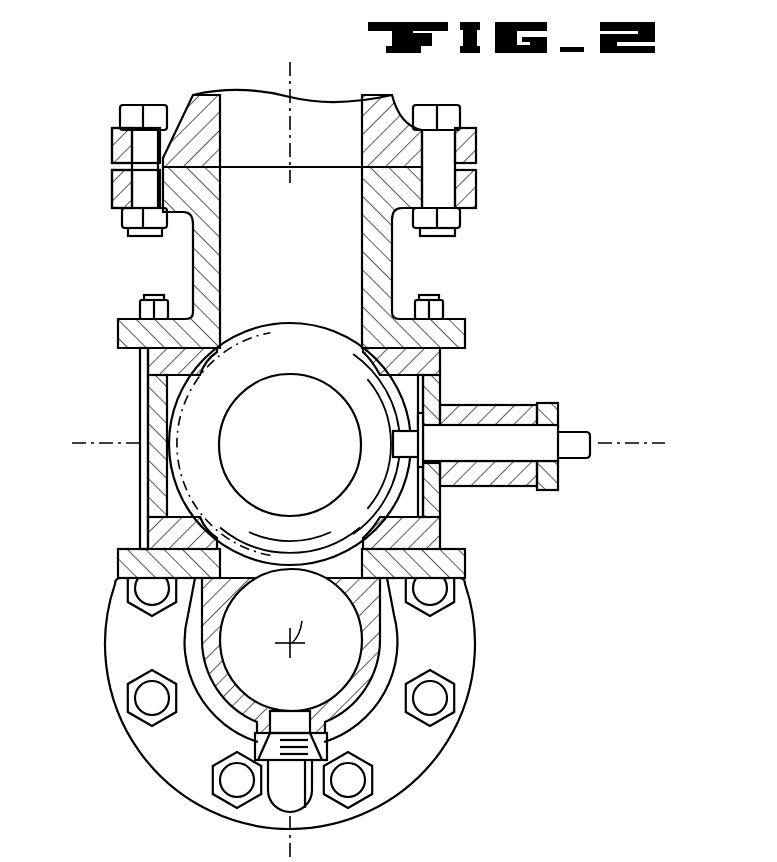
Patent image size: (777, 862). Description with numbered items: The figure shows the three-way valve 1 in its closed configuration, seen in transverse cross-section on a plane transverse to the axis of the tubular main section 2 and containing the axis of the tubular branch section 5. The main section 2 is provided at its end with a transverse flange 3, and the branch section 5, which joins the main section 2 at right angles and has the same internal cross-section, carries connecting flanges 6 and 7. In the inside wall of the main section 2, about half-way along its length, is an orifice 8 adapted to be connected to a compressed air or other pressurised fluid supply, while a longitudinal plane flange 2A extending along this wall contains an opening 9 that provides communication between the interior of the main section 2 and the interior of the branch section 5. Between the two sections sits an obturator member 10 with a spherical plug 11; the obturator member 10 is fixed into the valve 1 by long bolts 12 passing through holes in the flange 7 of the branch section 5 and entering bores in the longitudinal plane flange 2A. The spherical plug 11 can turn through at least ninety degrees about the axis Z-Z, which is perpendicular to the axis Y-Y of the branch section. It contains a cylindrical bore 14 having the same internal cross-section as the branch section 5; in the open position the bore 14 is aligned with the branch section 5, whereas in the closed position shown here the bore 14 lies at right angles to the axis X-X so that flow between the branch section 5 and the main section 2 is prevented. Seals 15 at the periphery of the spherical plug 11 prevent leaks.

The three-way valve 1 is at (560, 284).
The tubular main section 2 is at (373, 648).
The longitudinal plane flange 2A is at (463, 563).
The transverse flange 3 is at (473, 695).
The tubular branch section 5 is at (190, 253).
The connecting flange 6 is at (480, 183).
The connecting flange 7 is at (455, 330).
The orifice 8 is at (310, 748).
The opening 9 is at (256, 583).
The obturator member 10 is at (140, 386).
The spherical plug 11 is at (318, 326).
The long bolts 12 is at (150, 299).
The cylindrical bore 14 is at (222, 437).
The seals 15 is at (362, 358).